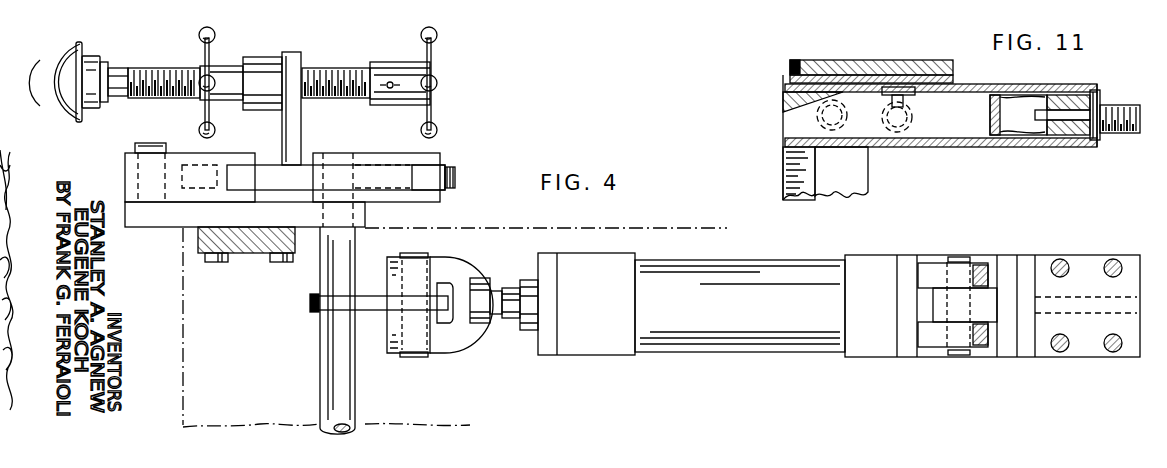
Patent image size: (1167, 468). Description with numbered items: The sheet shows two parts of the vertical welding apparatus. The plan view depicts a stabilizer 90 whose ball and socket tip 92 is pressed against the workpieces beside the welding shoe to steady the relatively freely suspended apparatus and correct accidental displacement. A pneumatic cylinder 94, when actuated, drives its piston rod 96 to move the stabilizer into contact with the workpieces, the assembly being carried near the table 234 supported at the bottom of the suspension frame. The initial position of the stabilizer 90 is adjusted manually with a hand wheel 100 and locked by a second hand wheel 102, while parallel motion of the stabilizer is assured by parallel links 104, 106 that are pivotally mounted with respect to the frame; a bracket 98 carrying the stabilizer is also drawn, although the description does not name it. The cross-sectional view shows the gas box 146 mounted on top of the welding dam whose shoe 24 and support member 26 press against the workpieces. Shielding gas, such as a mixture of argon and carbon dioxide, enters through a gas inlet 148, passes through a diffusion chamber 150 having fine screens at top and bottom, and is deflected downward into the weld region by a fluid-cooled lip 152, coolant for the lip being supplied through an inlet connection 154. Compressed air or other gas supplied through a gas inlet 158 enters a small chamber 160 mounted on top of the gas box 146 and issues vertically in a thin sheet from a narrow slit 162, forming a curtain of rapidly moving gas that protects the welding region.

In FIG. 4, the ball and socket tip 92 is at (57, 68).
In FIG. 4, the stabilizer 90 is at (163, 74).
In FIG. 4, the hand wheel 102 is at (216, 36).
In FIG. 4, the hand wheel 100 is at (440, 84).
In FIG. 4, the bracket block 98 is at (182, 155).
In FIG. 4, the parallel link 106 is at (428, 197).
In FIG. 4, the parallel link 104 is at (168, 222).
In FIG. 4, the table 234 is at (675, 232).
In FIG. 4, the piston rod 96 is at (497, 297).
In FIG. 4, the pneumatic cylinder 94 is at (807, 280).
In FIG. 11, the small chamber 160 is at (930, 24).
In FIG. 11, the narrow slit 162 is at (790, 65).
In FIG. 11, the gas box 146 is at (1003, 157).
In FIG. 11, the fluid-cooled lip 152 is at (790, 98).
In FIG. 11, the coolant inlet connection 154 is at (818, 118).
In FIG. 11, the gas inlet 158 is at (912, 116).
In FIG. 11, the shoe 24 is at (783, 175).
In FIG. 11, the support member 26 is at (853, 183).
In FIG. 11, the diffusion chamber 150 is at (1032, 127).
In FIG. 11, the gas inlet 148 is at (1145, 65).